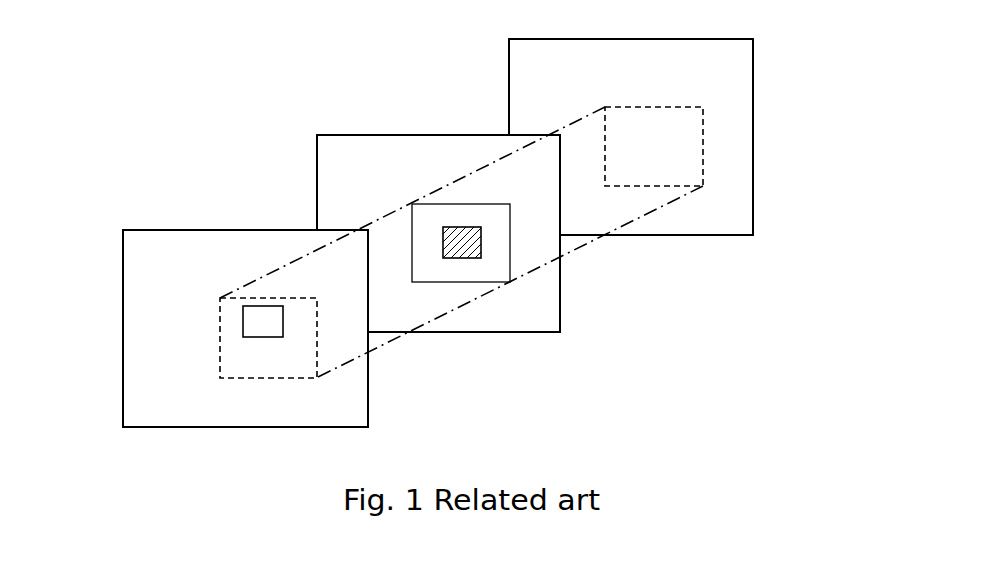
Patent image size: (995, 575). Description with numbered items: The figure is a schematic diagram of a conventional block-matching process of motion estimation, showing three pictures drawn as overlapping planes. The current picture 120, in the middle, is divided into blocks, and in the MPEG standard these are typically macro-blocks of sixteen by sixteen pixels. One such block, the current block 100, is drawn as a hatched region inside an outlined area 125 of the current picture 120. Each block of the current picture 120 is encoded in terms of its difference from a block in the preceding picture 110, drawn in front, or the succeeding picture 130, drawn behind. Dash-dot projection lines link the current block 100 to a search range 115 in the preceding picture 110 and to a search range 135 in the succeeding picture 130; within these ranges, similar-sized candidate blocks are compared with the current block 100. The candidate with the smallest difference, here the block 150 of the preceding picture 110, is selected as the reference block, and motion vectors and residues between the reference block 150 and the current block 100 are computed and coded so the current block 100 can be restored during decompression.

The current block 100 is at (462, 258).
The preceding picture 110 is at (141, 230).
The search range 115 is at (219, 343).
The current picture 120 is at (330, 134).
The object region on second plane 125 is at (511, 262).
The succeeding picture 130 is at (525, 38).
The search range 135 is at (703, 163).
The reference block 150 is at (260, 337).